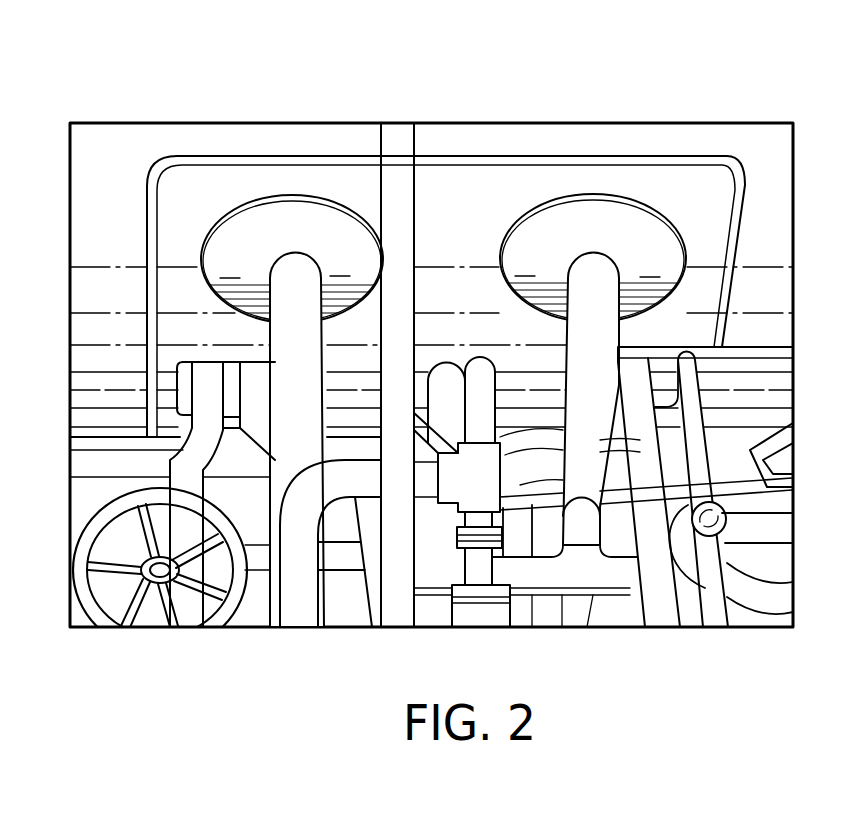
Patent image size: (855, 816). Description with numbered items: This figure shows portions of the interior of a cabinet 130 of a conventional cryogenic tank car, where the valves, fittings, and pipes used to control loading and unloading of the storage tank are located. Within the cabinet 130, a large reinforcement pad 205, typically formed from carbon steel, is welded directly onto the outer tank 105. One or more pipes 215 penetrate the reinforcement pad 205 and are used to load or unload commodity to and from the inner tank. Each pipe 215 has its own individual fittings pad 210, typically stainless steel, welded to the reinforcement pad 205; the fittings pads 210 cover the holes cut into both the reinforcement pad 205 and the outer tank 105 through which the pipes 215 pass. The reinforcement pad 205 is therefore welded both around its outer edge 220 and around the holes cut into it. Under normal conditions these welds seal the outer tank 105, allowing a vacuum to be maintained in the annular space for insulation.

The cabinet 130 is at (136, 56).
The outer tank 105 is at (762, 148).
The reinforcement pad 205 is at (466, 172).
The fittings pad 210 is at (289, 215).
The pipe 215 is at (290, 296).
The outer edge 220 is at (519, 157).